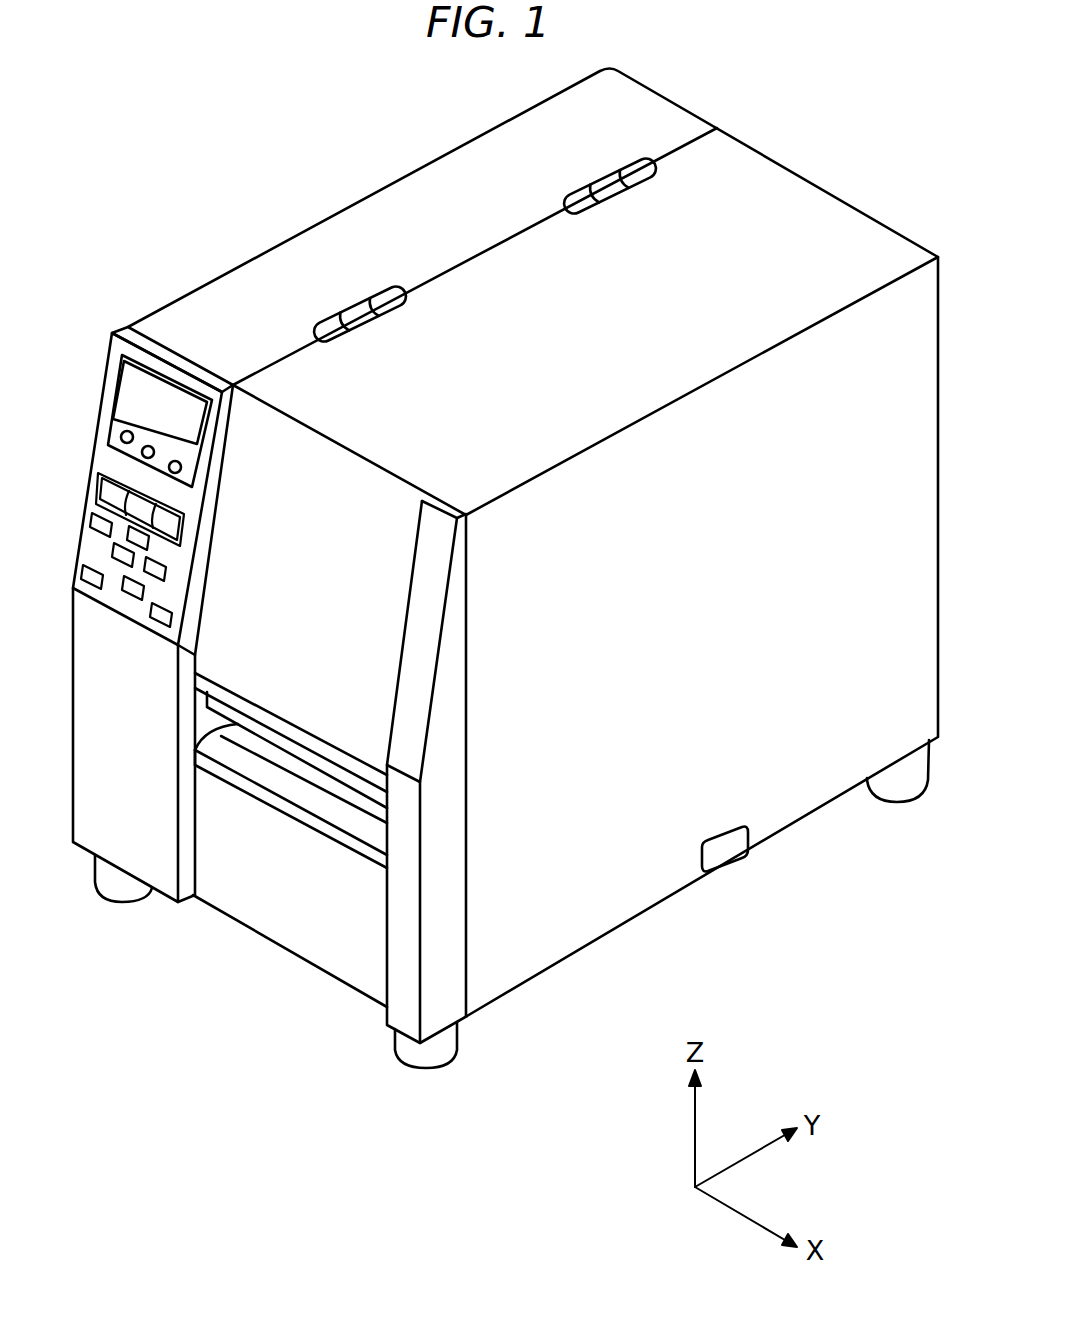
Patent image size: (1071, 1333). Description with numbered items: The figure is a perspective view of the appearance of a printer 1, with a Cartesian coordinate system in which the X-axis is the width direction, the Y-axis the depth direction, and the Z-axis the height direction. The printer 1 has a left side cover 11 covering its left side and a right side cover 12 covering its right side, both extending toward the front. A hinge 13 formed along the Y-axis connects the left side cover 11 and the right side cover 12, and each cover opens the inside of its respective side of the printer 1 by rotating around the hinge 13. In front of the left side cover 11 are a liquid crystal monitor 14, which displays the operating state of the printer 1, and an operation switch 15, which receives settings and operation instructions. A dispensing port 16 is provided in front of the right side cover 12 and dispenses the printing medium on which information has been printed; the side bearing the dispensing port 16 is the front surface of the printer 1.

The printer 1 is at (199, 132).
The left side cover 11 is at (240, 287).
The right side cover 12 is at (812, 210).
The hinge 13 is at (609, 172).
The liquid crystal monitor 14 is at (137, 396).
The operation switch 15 is at (100, 547).
The dispensing port 16 is at (275, 745).